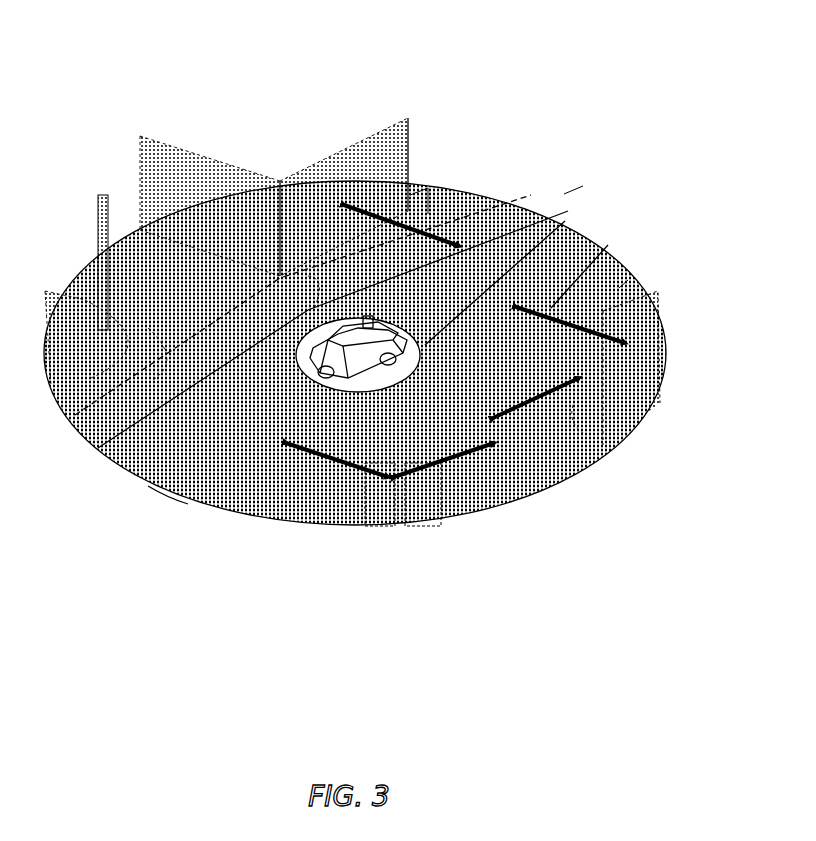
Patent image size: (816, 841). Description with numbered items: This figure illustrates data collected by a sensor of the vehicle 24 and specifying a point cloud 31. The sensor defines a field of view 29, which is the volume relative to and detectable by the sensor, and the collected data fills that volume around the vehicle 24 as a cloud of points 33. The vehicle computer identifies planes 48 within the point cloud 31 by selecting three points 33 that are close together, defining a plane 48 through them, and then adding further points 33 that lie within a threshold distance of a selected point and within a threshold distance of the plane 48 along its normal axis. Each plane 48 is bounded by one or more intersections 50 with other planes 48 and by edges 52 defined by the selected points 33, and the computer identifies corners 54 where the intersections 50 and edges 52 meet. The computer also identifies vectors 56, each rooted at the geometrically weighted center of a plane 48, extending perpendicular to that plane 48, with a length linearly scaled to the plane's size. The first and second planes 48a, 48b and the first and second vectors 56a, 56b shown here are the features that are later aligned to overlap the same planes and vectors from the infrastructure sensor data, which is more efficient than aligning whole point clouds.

The vehicle 24 is at (544, 213).
The field of view 29 is at (160, 487).
The point cloud 31 is at (566, 180).
The points 33 is at (620, 272).
The plane 48 is at (349, 157).
The first plane 48a is at (637, 313).
The second plane 48b is at (594, 427).
The intersection 50 is at (203, 153).
The edge 52 is at (322, 150).
The corner 54 is at (267, 173).
The vector 56 is at (463, 185).
The first vector 56a is at (611, 280).
The second vector 56b is at (561, 467).